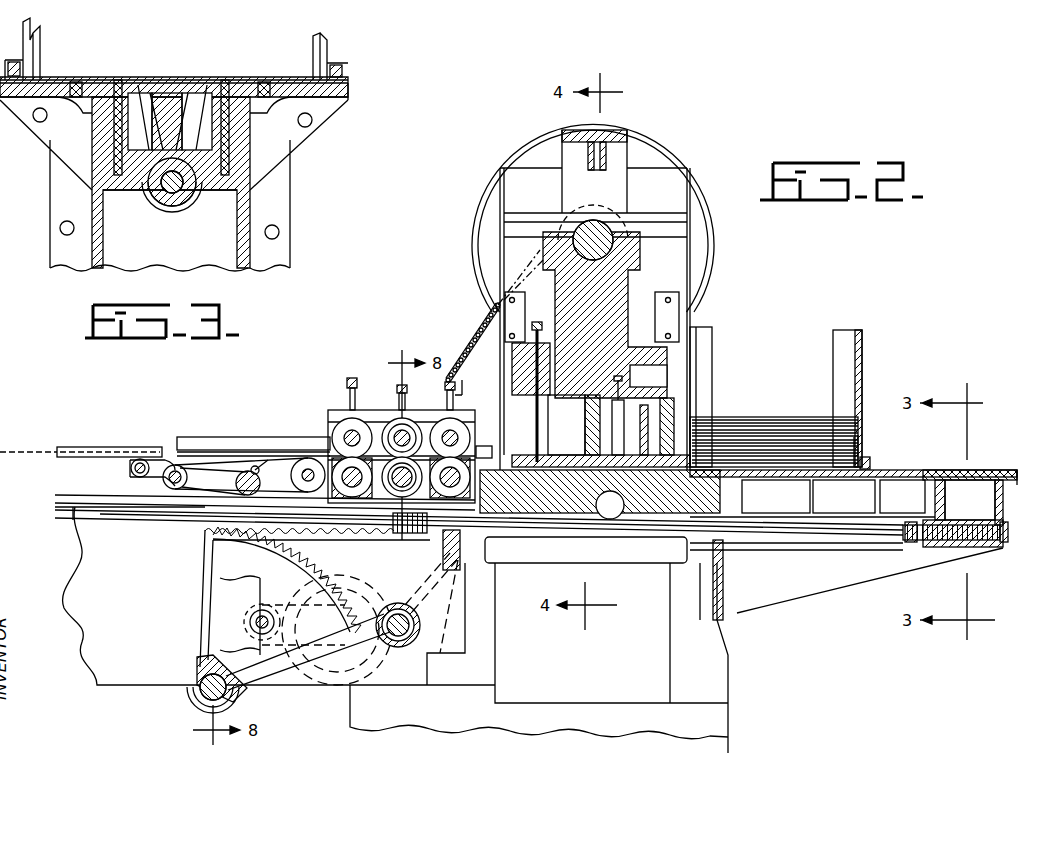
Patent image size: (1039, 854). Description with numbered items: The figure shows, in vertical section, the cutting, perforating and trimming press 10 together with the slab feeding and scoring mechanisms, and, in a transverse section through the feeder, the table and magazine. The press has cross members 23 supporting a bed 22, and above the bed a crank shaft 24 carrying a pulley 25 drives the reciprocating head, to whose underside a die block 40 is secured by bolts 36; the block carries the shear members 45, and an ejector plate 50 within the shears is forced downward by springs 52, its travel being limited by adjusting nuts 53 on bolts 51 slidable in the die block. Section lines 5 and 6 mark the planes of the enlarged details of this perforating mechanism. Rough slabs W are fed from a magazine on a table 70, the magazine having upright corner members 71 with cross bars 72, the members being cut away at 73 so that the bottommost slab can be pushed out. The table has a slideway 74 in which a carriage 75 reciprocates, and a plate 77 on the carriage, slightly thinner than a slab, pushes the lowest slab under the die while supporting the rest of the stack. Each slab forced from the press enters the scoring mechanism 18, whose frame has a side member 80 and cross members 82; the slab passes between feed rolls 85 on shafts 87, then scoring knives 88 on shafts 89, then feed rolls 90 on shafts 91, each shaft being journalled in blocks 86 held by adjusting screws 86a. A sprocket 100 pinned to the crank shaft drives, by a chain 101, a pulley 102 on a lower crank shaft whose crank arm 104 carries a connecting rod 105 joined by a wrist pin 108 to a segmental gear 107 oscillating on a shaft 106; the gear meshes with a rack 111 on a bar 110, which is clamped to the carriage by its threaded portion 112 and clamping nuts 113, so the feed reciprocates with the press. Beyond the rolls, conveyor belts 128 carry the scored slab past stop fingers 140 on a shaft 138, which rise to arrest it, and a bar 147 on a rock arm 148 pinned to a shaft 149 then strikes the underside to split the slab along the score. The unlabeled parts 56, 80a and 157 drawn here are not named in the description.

In FIG. 2, the workpiece blank 5 is at (584, 417).
In FIG. 2, the section indicator 6 is at (660, 371).
In FIG. 2, the cutting, perforating and trimming mechanism 10 is at (685, 290).
In FIG. 2, the slab scoring mechanism 18 is at (330, 418).
In FIG. 2, the bed 22 is at (539, 604).
In FIG. 2, the cross members 23 is at (603, 140).
In FIG. 2, the crank shaft 24 is at (606, 250).
In FIG. 2, the pulley 25 is at (715, 242).
In FIG. 2, the bolts 36 is at (648, 398).
In FIG. 2, the die block 40 is at (656, 414).
In FIG. 2, the shear members 45 is at (470, 456).
In FIG. 2, the ejector plate 50 is at (566, 425).
In FIG. 2, the bolts 51 is at (537, 370).
In FIG. 2, the springs 52 is at (662, 428).
In FIG. 2, the adjusting nuts 53 is at (540, 328).
In FIG. 2, the guide block 56 is at (600, 440).
In FIG. 3, the table 70 is at (292, 142).
In FIG. 2, the table 70 is at (912, 470).
In FIG. 3, the upright corner members 71 is at (33, 50).
In FIG. 2, the upright corner members 71 is at (712, 334).
In FIG. 2, the cross bars 72 is at (700, 440).
In FIG. 2, the cut-away portion 73 is at (682, 470).
In FIG. 3, the slideway 74 is at (208, 188).
In FIG. 2, the slideway 74 is at (852, 480).
In FIG. 3, the carriage 75 is at (172, 138).
In FIG. 2, the carriage 75 is at (940, 496).
In FIG. 3, the plate 77 is at (268, 80).
In FIG. 2, the plate 77 is at (988, 470).
In FIG. 2, the side frame member 80 is at (279, 596).
In FIG. 2, the roller housing top 80a is at (334, 410).
In FIG. 2, the cross members 82 is at (95, 509).
In FIG. 2, the upper and lower feed rolls 85 is at (458, 480).
In FIG. 2, the blocks 86 is at (412, 478).
In FIG. 2, the adjusting screws 86a is at (358, 380).
In FIG. 2, the shafts 87 is at (458, 440).
In FIG. 2, the scoring knives 88 is at (417, 397).
In FIG. 2, the shafts 89 is at (395, 432).
In FIG. 2, the feed rolls 90 is at (347, 428).
In FIG. 2, the shafts 91 is at (345, 437).
In FIG. 2, the sprocket 100 is at (622, 222).
In FIG. 2, the chain 101 is at (480, 354).
In FIG. 2, the pulley 102 is at (386, 668).
In FIG. 2, the crank arm 104 is at (406, 620).
In FIG. 2, the connecting rod 105 is at (300, 670).
In FIG. 2, the shaft 106 is at (235, 700).
In FIG. 2, the segmental gear 107 is at (283, 546).
In FIG. 2, the wrist pin 108 is at (257, 613).
In FIG. 2, the bar 110 is at (198, 518).
In FIG. 2, the rack 111 is at (398, 540).
In FIG. 3, the threaded portion 112 is at (178, 196).
In FIG. 2, the threaded portion 112 is at (950, 540).
In FIG. 2, the clamping nuts 113 is at (915, 545).
In FIG. 2, the conveyor belts 128 is at (81, 442).
In FIG. 2, the shaft 138 is at (141, 460).
In FIG. 2, the stop fingers 140 is at (134, 475).
In FIG. 2, the bar 147 is at (212, 460).
In FIG. 2, the rock arm 148 is at (224, 477).
In FIG. 2, the shaft 149 is at (170, 482).
In FIG. 2, the plate 157 is at (255, 426).
In FIG. 2, the rough slab W is at (816, 416).